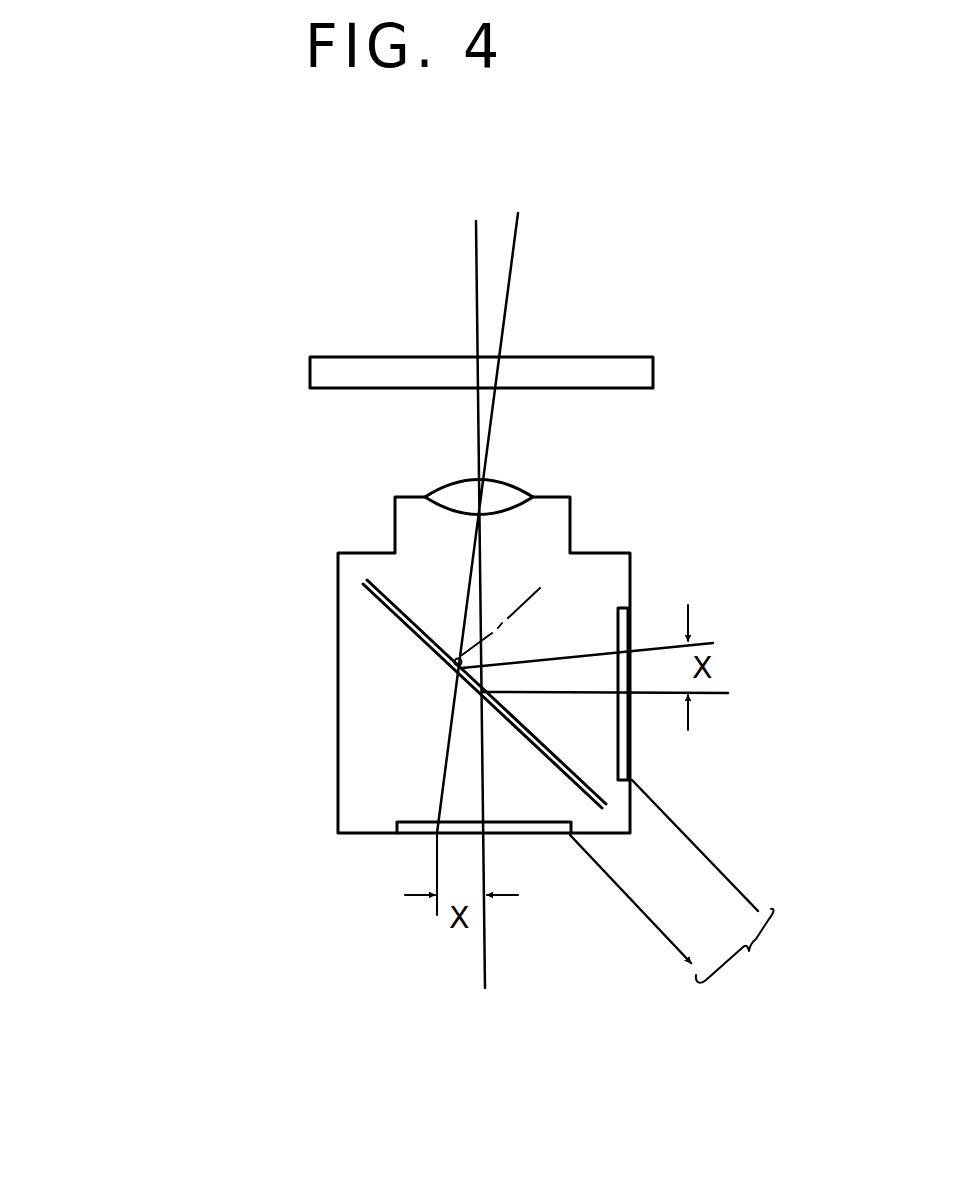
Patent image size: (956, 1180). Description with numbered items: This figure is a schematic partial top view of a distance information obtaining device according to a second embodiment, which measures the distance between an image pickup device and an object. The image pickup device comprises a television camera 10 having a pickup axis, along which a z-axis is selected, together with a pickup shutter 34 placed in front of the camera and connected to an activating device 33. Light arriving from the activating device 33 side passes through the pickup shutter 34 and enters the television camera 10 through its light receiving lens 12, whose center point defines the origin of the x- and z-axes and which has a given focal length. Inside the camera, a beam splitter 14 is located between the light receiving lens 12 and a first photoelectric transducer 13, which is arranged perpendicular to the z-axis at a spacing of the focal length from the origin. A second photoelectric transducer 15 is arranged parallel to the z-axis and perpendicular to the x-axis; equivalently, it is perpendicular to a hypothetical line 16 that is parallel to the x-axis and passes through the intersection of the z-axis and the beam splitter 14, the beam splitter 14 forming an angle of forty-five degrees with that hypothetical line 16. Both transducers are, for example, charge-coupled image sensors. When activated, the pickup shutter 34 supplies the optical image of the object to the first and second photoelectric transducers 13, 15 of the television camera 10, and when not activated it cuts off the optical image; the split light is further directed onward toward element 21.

The television camera 10 is at (657, 578).
The light receiving lens 12 is at (505, 482).
The first photoelectric transducer 13 is at (528, 834).
The beam splitter 14 is at (397, 620).
The second photoelectric transducer 15 is at (628, 761).
The hypothetical line 16 is at (713, 688).
The pickup shutter 34 is at (558, 357).
The activating device 33 is at (307, 373).
The detector (to 21) 21 is at (696, 888).